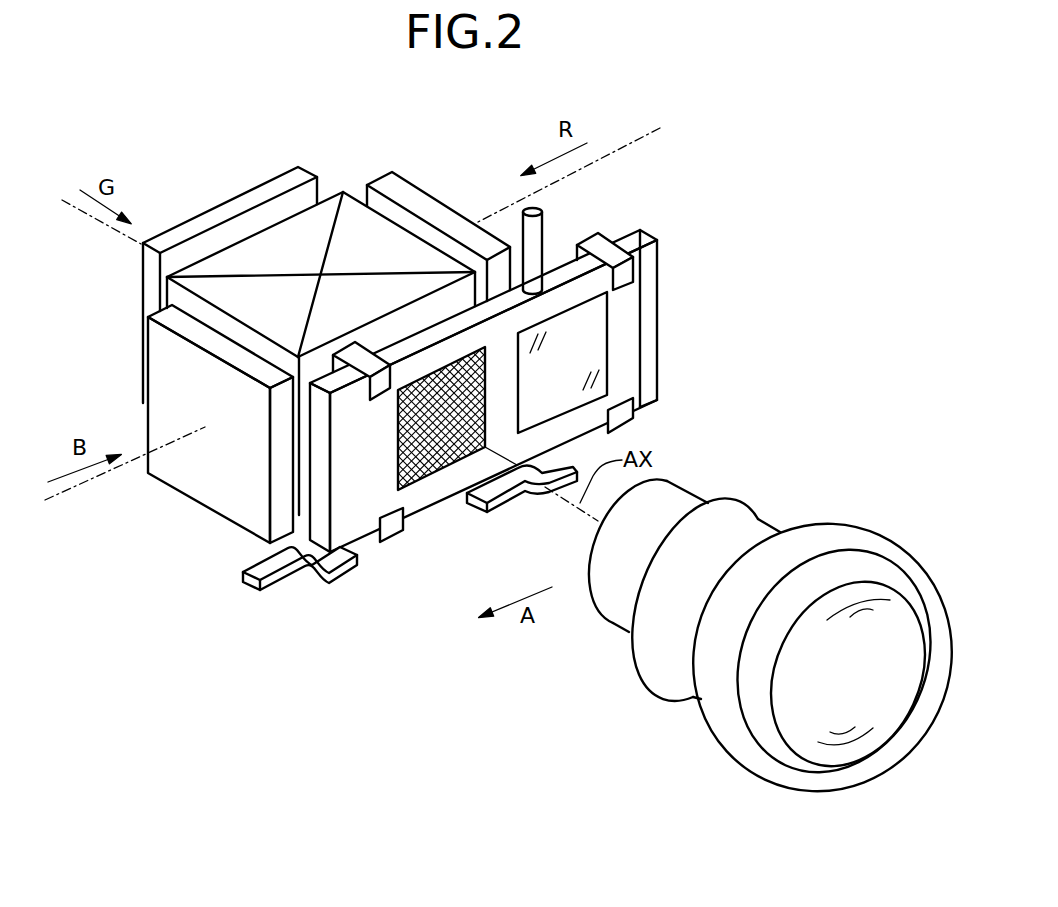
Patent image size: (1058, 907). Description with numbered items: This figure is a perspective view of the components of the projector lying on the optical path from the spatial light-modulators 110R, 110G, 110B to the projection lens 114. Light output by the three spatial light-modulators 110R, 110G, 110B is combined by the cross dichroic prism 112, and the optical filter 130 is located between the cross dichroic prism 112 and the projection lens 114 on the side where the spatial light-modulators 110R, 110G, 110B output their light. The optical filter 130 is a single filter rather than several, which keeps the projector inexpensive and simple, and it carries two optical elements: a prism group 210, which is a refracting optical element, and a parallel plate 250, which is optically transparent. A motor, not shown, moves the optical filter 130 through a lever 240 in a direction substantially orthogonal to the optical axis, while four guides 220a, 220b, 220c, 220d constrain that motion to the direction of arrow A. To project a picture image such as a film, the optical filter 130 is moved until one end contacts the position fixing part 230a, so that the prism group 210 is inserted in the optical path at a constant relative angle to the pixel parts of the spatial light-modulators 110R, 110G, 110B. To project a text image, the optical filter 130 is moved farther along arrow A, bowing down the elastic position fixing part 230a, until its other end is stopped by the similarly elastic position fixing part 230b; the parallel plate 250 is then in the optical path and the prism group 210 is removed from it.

The spatial light-modulator 110G is at (270, 187).
The spatial light-modulator 110R is at (408, 195).
The spatial light-modulator 110B is at (172, 366).
The cross dichroic prism 112 is at (350, 215).
The projection lens 114 is at (717, 707).
The optical filter 130 is at (640, 303).
The prism group 210 is at (447, 470).
The guide 220a is at (610, 260).
The guide 220b is at (635, 420).
The guide 220c is at (363, 357).
The guide 220d is at (410, 533).
The position fixing part 230a is at (258, 570).
The position fixing part 230b is at (507, 485).
The lever 240 is at (543, 228).
The parallel plate 250 is at (587, 353).